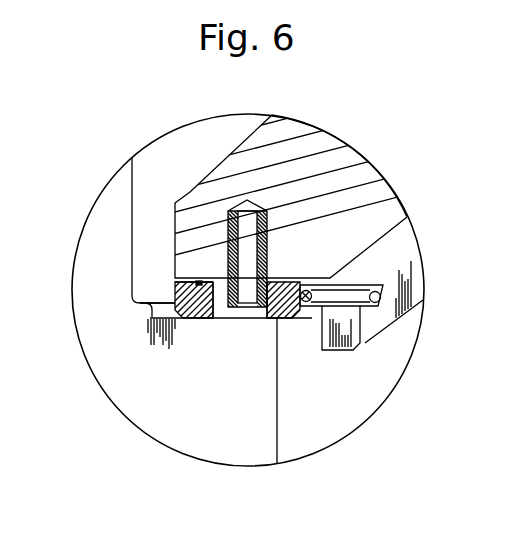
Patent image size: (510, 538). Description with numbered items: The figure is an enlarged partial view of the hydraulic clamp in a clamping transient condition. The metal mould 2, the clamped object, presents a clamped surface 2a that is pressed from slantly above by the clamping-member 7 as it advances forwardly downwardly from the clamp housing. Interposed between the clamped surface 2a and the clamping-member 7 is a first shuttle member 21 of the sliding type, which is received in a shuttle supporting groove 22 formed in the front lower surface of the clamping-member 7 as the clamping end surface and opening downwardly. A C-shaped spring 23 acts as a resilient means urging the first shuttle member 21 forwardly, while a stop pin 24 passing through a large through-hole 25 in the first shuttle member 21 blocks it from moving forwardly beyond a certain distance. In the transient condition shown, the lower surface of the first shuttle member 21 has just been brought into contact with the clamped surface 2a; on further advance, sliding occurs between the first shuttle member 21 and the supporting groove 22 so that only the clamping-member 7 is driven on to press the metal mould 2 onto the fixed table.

The metal mould 2 is at (97, 360).
The clamped surface 2a is at (172, 296).
The clamping-member 7 is at (318, 147).
The first shuttle member 21 is at (175, 281).
The shuttle supporting groove 22 is at (192, 281).
The C-shaped spring 23 is at (350, 298).
The stop pin 24 is at (222, 220).
The large through-hole 25 is at (218, 319).